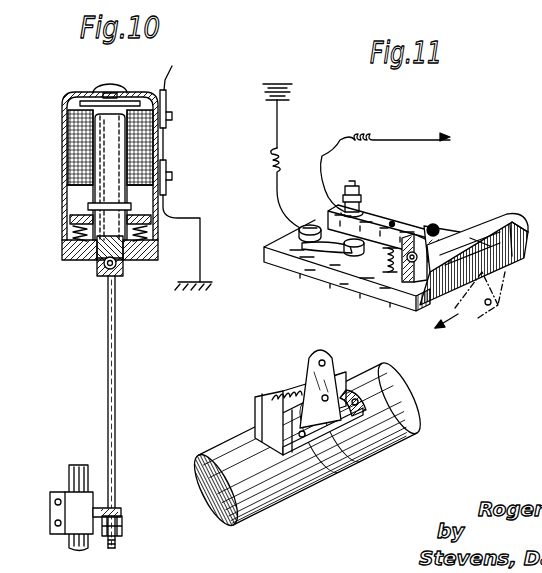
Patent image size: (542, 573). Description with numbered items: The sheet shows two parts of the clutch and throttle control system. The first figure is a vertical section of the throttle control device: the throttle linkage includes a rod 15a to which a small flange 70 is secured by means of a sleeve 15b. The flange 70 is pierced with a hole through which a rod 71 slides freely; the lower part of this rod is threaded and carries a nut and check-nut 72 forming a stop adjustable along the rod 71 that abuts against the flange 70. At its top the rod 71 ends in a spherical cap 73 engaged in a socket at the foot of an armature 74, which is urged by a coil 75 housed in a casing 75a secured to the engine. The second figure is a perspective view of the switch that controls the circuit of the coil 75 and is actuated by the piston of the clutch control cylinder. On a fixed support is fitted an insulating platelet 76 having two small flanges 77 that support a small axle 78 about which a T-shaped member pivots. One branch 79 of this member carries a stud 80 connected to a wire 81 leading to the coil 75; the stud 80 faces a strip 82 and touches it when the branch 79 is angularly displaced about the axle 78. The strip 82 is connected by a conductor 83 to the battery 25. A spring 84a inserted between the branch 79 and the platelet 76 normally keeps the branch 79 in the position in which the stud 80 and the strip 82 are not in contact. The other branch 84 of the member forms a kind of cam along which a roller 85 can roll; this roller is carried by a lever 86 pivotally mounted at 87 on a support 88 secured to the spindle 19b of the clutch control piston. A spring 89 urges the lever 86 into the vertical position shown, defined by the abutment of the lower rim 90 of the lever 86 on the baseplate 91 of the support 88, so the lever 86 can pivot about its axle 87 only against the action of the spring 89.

In FIG. 10, the rod 15a is at (72, 480).
In FIG. 10, the sleeve 15b is at (78, 508).
In FIG. 11, the spindle of the clutch control piston 19b is at (281, 472).
In FIG. 11, the battery 25 is at (294, 87).
In FIG. 10, the flange 70 is at (101, 512).
In FIG. 10, the rod 71 is at (109, 349).
In FIG. 10, the nut and check-nut 72 is at (122, 529).
In FIG. 10, the spherical cap 73 is at (101, 262).
In FIG. 10, the armature 74 is at (104, 165).
In FIG. 10, the coil 75 is at (78, 137).
In FIG. 10, the casing 75a is at (66, 199).
In FIG. 11, the insulating platelet 76 is at (282, 242).
In FIG. 11, the flanges 77 is at (446, 226).
In FIG. 11, the axle 78 is at (407, 262).
In FIG. 11, the branch 79 is at (398, 222).
In FIG. 11, the stud 80 is at (358, 200).
In FIG. 10, the wire 81 is at (174, 70).
In FIG. 11, the wire 81 is at (415, 124).
In FIG. 11, the strip 82 is at (325, 247).
In FIG. 11, the conductor 83 is at (281, 133).
In FIG. 11, the branch 84 is at (500, 232).
In FIG. 11, the spring 84a is at (385, 267).
In FIG. 11, the roller 85 is at (313, 352).
In FIG. 11, the lever 86 is at (336, 378).
In FIG. 11, the pivot axle 87 is at (305, 437).
In FIG. 11, the support 88 is at (328, 402).
In FIG. 11, the spring 89 is at (298, 386).
In FIG. 11, the lower rim 90 is at (330, 470).
In FIG. 11, the baseplate 91 is at (358, 406).